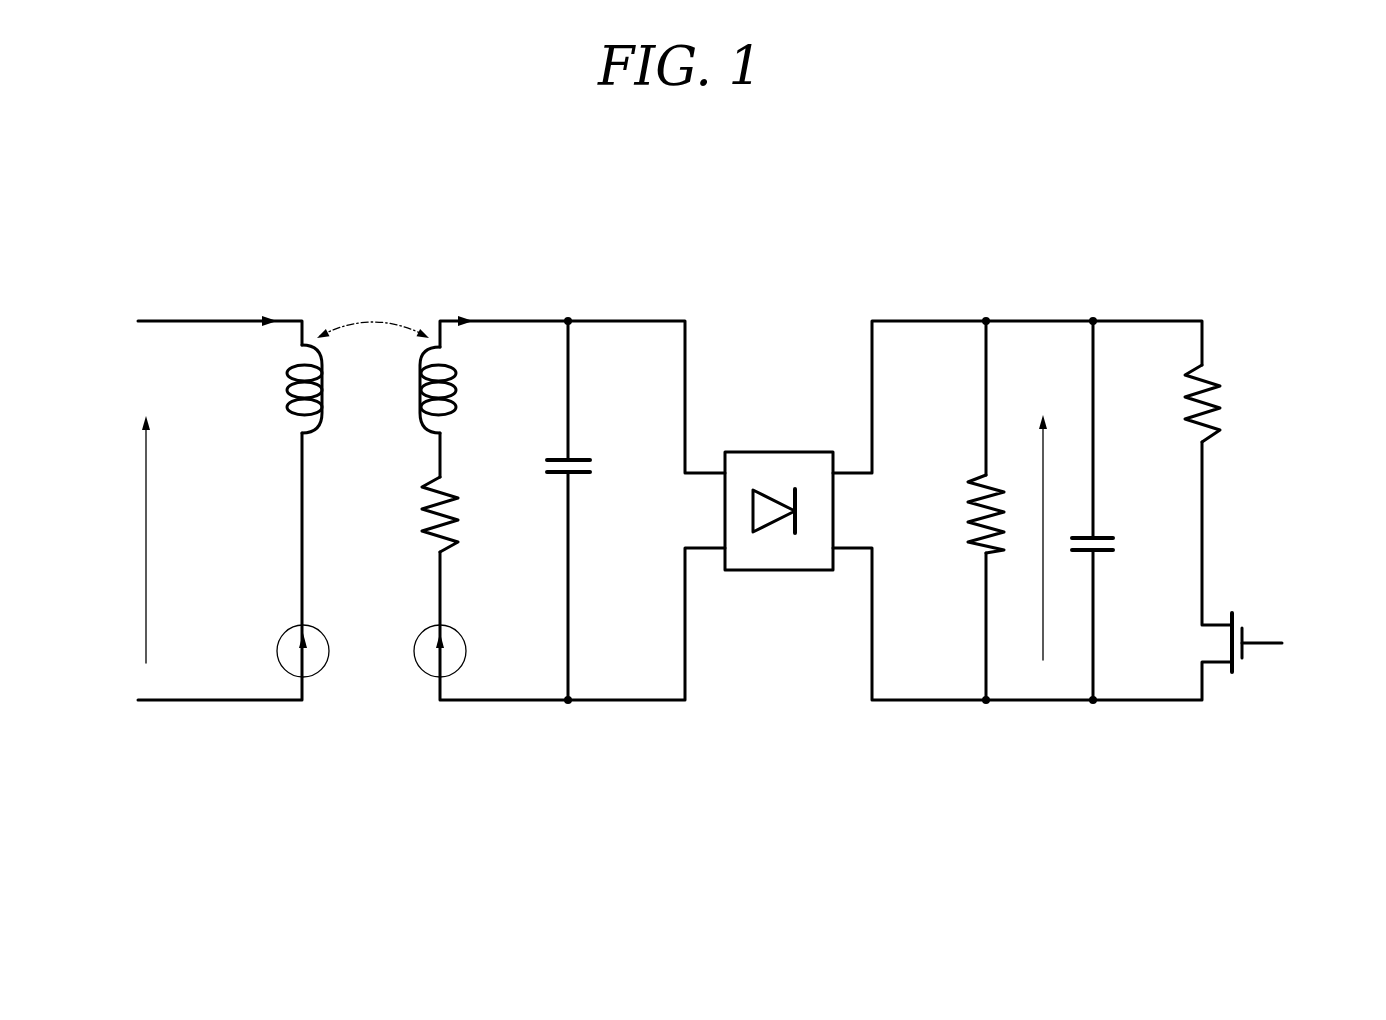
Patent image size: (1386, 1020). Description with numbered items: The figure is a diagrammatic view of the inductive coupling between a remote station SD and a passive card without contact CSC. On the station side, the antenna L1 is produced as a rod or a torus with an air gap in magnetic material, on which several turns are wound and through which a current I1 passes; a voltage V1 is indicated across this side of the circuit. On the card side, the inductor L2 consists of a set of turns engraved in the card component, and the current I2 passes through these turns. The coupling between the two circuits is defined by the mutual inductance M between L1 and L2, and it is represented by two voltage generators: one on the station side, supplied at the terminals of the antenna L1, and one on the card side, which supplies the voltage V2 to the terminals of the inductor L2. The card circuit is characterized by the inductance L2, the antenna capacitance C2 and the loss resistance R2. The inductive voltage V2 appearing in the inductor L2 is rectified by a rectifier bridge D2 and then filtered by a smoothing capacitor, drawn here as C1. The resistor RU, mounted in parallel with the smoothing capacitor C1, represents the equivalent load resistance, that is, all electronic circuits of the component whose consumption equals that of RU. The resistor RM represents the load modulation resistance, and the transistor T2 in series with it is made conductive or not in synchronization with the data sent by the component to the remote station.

The remote station SD is at (223, 273).
The passive card without contact CSC is at (571, 275).
The mutual inductance M is at (373, 310).
The current I1 is at (271, 304).
The current I2 is at (464, 304).
The primary voltage V1 is at (150, 517).
The inductive voltage V2 is at (1046, 518).
The antenna L1 is at (279, 389).
The inductor L2 is at (461, 390).
The loss resistance R2 is at (466, 514).
The antenna capacitance C2 is at (593, 467).
The rectifier bridge D2 is at (778, 458).
The equivalent load resistance RU is at (958, 514).
The smoothing capacitor C1 is at (1116, 548).
The load modulation resistance RM is at (1234, 403).
The transistor T2 is at (1223, 650).
The element data is at (1299, 640).